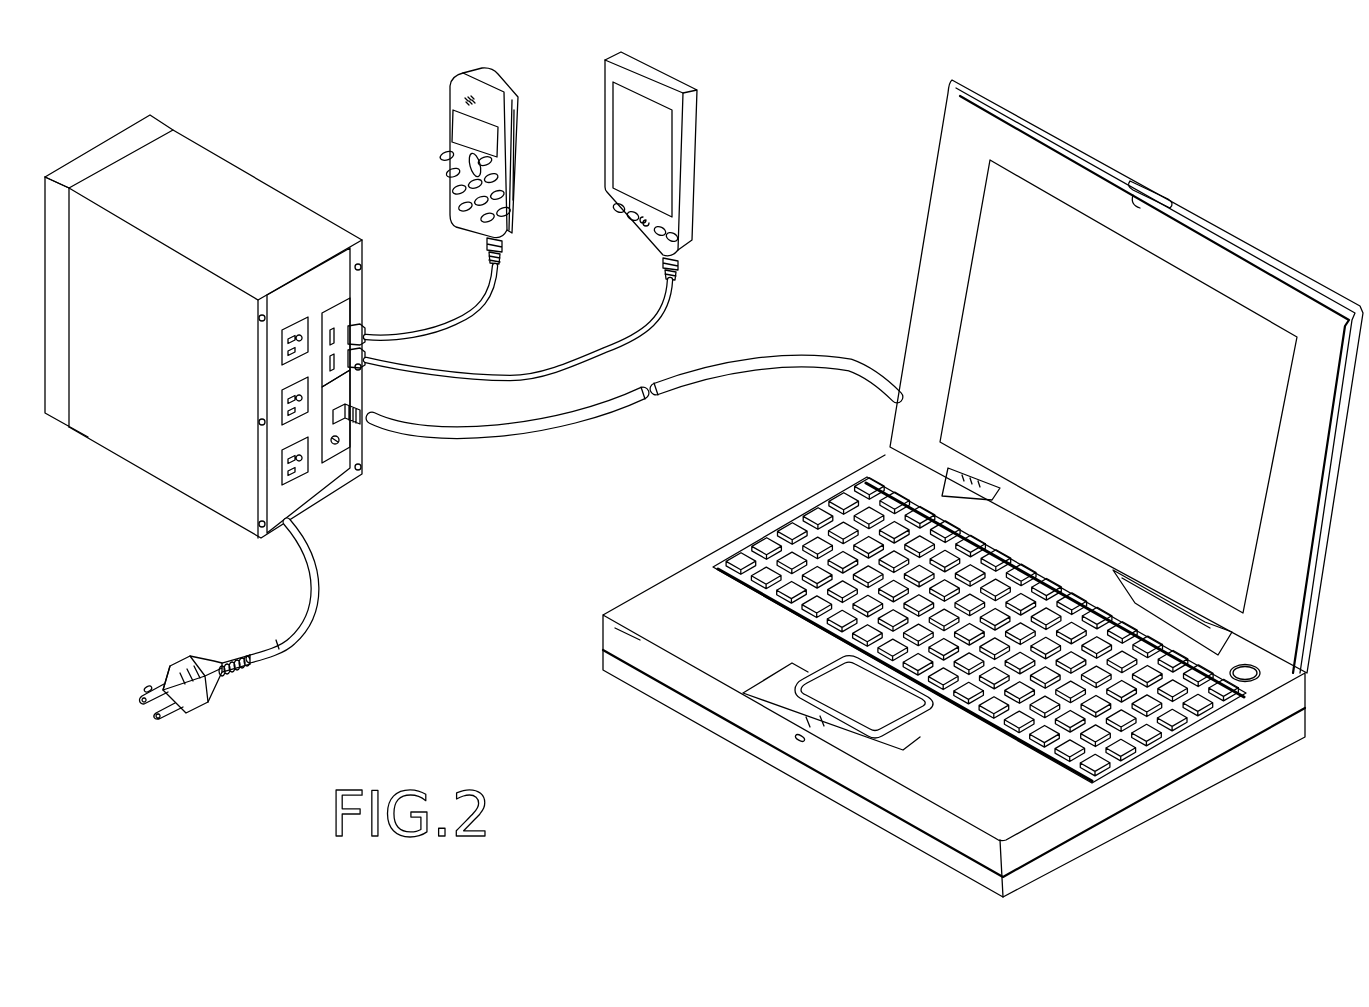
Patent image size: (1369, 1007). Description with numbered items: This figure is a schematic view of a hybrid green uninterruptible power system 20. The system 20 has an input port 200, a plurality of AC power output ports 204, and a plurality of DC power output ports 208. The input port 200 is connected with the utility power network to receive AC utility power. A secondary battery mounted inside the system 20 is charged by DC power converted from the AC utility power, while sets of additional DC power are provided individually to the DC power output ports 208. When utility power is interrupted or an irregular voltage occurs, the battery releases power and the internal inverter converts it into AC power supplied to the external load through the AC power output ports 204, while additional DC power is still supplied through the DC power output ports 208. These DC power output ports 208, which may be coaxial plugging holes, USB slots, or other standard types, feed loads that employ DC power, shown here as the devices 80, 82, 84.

The hybrid green uninterruptible power system 20 is at (196, 150).
The AC power output port 204 is at (282, 347).
The DC power output port 208 is at (353, 312).
The input port 200 is at (176, 664).
The device 80 is at (480, 75).
The device 82 is at (684, 89).
The device 84 is at (1132, 152).